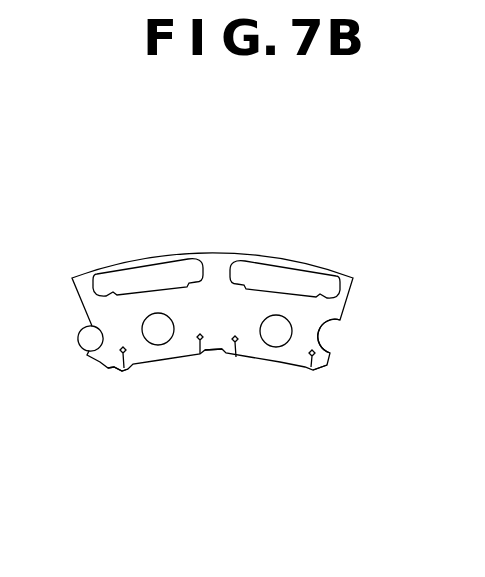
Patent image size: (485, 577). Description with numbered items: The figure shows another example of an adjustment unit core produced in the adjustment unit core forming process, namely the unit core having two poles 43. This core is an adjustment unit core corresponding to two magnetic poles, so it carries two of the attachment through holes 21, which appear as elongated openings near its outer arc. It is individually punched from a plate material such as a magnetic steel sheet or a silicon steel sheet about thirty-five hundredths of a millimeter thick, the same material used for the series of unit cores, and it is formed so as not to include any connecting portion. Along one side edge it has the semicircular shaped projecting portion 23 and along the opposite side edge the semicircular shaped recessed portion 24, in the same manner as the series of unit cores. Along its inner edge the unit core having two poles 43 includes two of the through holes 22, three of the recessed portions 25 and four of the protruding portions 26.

The unit core having two poles 43 is at (208, 193).
The attachment through hole 21 is at (137, 272).
The through hole 22 is at (158, 334).
The semicircular shaped projecting portion 23 is at (96, 349).
The semicircular shaped recessed portion 24 is at (330, 340).
The recessed portion 25 is at (117, 367).
The protruding portion 26 is at (123, 354).